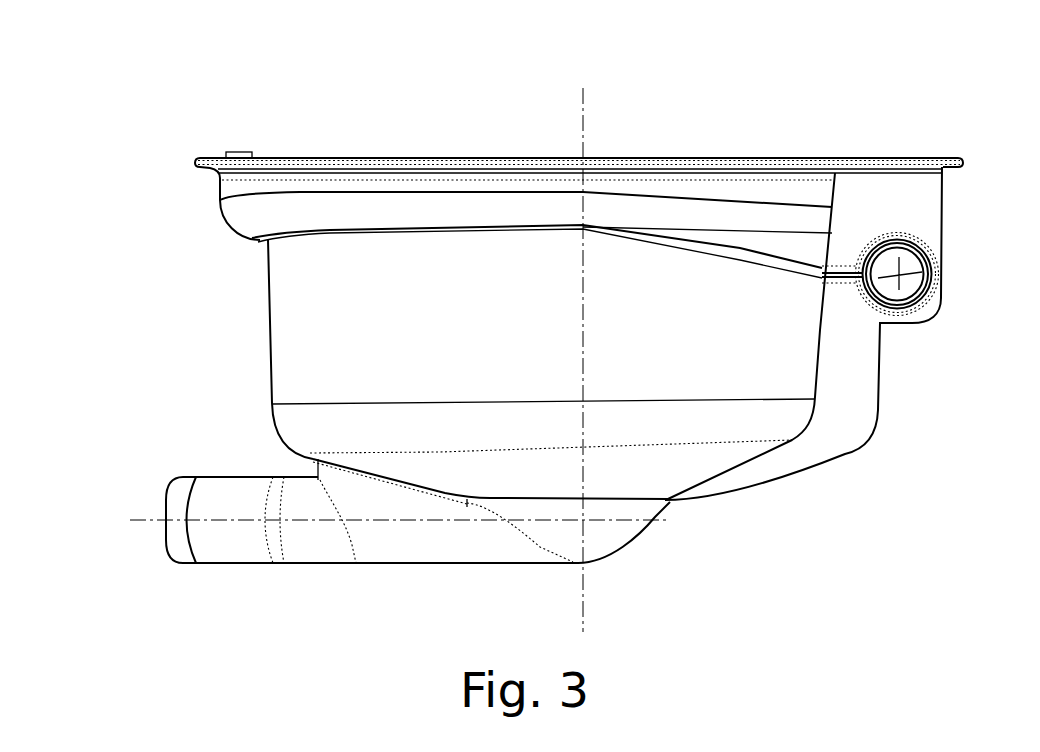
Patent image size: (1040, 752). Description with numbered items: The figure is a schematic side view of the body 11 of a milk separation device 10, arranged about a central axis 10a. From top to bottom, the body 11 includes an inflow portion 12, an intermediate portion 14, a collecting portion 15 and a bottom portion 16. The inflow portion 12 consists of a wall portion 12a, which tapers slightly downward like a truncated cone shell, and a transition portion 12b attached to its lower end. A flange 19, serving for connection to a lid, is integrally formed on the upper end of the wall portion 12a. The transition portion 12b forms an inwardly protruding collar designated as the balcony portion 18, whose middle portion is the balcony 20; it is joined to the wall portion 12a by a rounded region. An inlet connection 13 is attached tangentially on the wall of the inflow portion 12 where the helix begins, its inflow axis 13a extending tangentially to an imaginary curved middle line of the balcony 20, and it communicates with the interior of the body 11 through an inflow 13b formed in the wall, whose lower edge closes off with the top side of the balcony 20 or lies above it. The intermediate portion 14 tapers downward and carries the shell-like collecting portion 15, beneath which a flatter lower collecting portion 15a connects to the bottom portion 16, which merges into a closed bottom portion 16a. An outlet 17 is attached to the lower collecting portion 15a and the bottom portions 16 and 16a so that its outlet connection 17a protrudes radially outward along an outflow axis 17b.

The milk separation device 10 is at (330, 103).
The central axis 10a is at (590, 88).
The body 11 is at (268, 355).
The inflow portion 12 is at (457, 202).
The wall portion 12a is at (228, 188).
The transition portion 12b is at (238, 215).
The inlet connection 13 is at (917, 313).
The inflow axis 13a is at (907, 272).
The inflow 13b is at (918, 245).
The intermediate portion 14 is at (283, 303).
The collecting portion 15 is at (778, 422).
The lower collecting portion 15a is at (730, 458).
The bottom portion 16 is at (647, 508).
The closed bottom portion 16a is at (613, 545).
The outlet 17 is at (458, 542).
The outlet connection 17a is at (207, 492).
The outflow axis 17b is at (212, 525).
The balcony portion 18 is at (258, 240).
The flange 19 is at (758, 160).
The balcony 20 is at (893, 241).